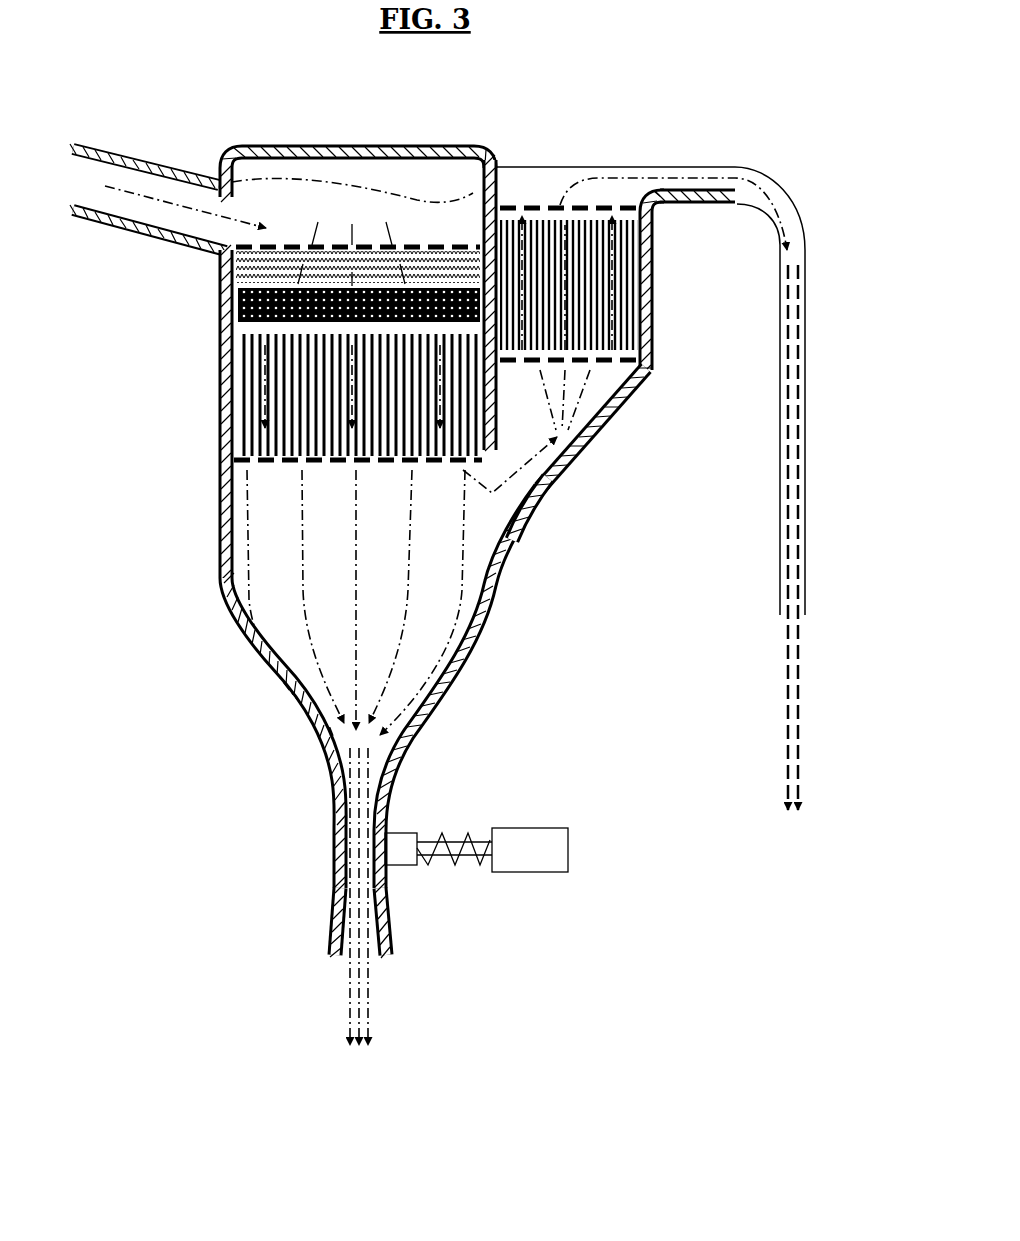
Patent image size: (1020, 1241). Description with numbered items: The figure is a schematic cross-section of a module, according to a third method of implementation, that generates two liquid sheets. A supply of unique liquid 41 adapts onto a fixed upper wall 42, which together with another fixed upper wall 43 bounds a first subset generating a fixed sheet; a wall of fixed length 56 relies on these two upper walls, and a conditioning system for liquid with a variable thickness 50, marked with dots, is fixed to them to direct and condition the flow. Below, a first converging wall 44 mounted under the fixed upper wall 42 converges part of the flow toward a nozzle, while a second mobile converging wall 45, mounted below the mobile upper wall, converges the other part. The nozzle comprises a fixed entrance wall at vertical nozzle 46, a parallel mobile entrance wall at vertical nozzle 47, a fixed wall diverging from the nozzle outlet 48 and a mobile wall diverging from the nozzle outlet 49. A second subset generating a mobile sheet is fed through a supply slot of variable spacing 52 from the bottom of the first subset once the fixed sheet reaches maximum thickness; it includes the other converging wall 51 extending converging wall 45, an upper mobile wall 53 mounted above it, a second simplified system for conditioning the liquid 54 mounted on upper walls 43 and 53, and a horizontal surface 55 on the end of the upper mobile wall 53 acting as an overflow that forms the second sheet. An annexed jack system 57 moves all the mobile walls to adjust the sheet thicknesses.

The supply of unique liquid 41 is at (100, 214).
The fixed upper wall 42 is at (216, 462).
The fixed upper wall 43 is at (577, 457).
The first converging wall 44 is at (274, 689).
The second mobile converging wall 45 is at (437, 702).
The fixed entrance wall of vertical nozzle 46 is at (332, 850).
The mobile entrance wall of vertical nozzle 47 is at (391, 821).
The fixed diverging wall of nozzle outlet 48 is at (329, 913).
The mobile diverging wall of nozzle outlet 49 is at (393, 908).
The conditioning system for liquid with variable thickness 50 is at (388, 327).
The converging wall 51 is at (551, 495).
The supply slot of variable spacing 52 is at (487, 506).
The upper mobile wall 53 is at (656, 329).
The second simplified system for conditioning the liquid 54 is at (590, 258).
The horizontal surface 55 is at (694, 207).
The wall of fixed length 56 is at (340, 144).
The annexed jack system 57 is at (523, 858).